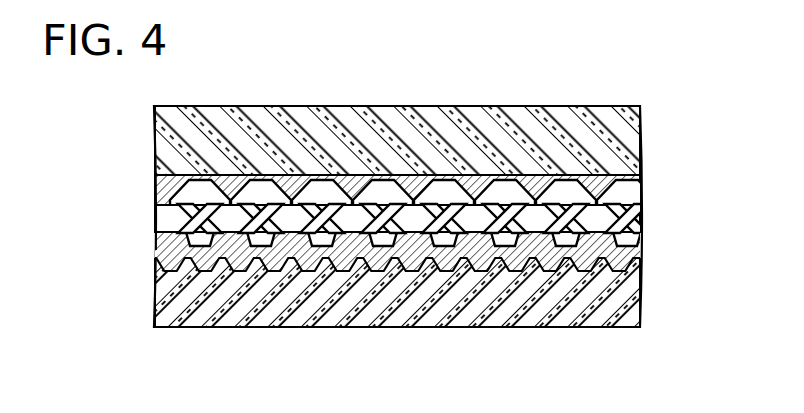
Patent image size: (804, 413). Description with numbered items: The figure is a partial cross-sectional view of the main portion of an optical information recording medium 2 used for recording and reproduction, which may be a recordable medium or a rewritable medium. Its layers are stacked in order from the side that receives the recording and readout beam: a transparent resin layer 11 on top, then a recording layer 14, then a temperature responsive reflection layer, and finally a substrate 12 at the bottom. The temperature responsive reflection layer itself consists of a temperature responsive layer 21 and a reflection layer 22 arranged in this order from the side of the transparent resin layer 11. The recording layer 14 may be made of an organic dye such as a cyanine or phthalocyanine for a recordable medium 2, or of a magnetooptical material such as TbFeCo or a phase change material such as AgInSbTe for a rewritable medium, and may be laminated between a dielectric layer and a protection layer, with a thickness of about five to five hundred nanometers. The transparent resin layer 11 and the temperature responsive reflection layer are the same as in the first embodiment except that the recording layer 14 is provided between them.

The optical information recording medium 2 is at (664, 83).
The transparent resin layer 11 is at (627, 150).
The substrate 12 is at (627, 292).
The recording layer 14 is at (625, 192).
The temperature responsive layer 21 is at (628, 215).
The reflection layer 22 is at (627, 245).